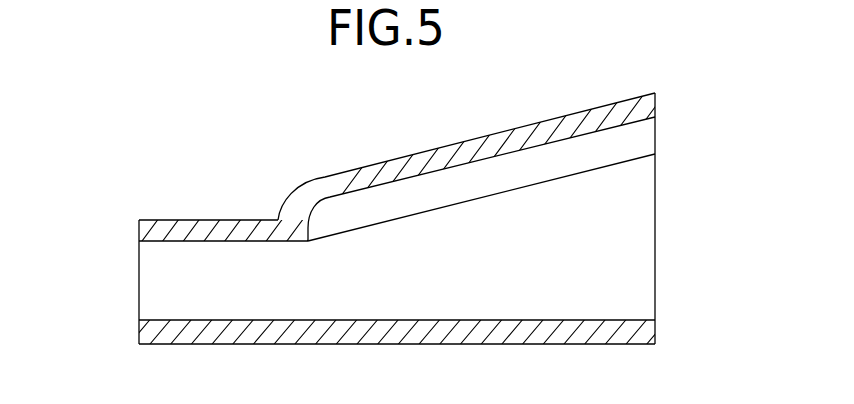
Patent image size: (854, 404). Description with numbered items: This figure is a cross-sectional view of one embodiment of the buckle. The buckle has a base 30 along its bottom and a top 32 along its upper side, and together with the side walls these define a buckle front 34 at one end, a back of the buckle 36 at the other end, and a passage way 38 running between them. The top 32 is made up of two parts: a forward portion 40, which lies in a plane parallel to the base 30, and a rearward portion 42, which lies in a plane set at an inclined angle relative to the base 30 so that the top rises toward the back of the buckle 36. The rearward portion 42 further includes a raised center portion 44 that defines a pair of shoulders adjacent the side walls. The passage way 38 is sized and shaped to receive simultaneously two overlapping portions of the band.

The base 30 is at (505, 357).
The top 32 is at (385, 142).
The buckle front 34 is at (139, 281).
The back of the buckle 36 is at (670, 275).
The passage way 38 is at (445, 283).
The forward portion 40 is at (235, 267).
The rearward portion 42 is at (618, 220).
The raised center portion 44 is at (456, 143).